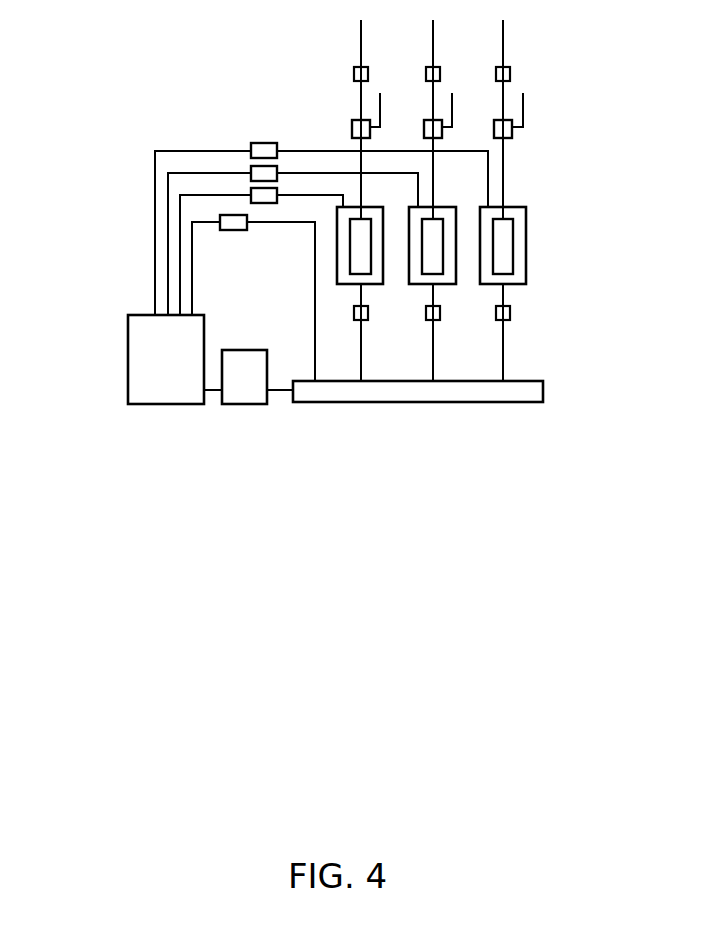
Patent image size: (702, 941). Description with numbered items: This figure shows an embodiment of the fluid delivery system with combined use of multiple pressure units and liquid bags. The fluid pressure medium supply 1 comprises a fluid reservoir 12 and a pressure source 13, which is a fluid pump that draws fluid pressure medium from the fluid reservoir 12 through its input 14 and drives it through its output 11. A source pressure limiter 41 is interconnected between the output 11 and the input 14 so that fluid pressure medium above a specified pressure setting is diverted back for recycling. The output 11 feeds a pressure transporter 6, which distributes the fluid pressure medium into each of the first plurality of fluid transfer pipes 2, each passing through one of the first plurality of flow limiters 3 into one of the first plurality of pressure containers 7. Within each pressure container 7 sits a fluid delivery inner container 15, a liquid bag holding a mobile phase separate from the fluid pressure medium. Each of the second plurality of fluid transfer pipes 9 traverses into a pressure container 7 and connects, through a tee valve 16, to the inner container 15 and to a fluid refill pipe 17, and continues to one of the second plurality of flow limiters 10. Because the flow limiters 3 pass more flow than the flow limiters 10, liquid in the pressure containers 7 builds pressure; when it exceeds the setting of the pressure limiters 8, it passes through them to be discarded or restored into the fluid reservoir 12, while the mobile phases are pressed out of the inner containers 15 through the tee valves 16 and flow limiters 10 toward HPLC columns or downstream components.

The fluid pressure medium supply 1 is at (126, 453).
The first plurality of fluid transfer pipes 2 is at (433, 350).
The first plurality of flow limiters 3 is at (440, 313).
The pressure transporter 6 is at (410, 394).
The first plurality of pressure containers 7 is at (526, 213).
The first plurality of pressure limiters 8 is at (264, 143).
The second plurality of fluid transfer pipes 9 is at (433, 170).
The second plurality of flow limiters 10 is at (440, 74).
The output 11 is at (280, 392).
The fluid reservoir 12 is at (128, 356).
The pressure source 13 is at (250, 405).
The input 14 is at (213, 392).
The fluid delivery inner containers 15 is at (513, 260).
The tee valves 16 is at (442, 135).
The fluid refill pipes 17 is at (452, 107).
The source pressure limiter 41 is at (228, 231).